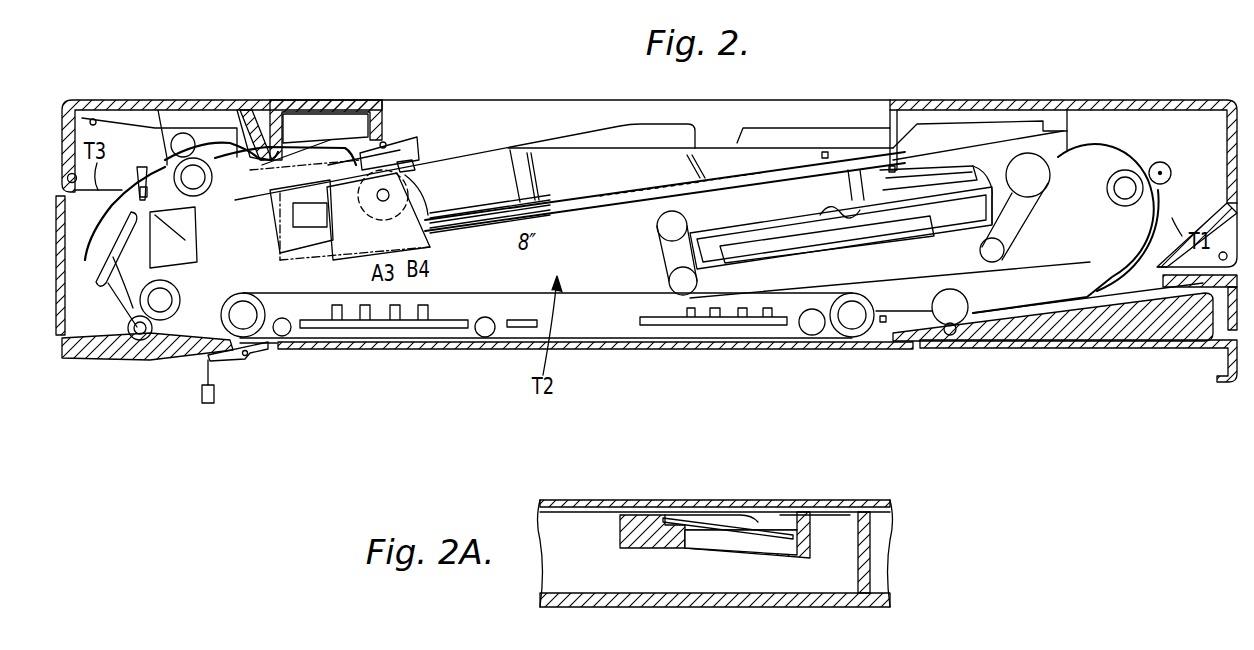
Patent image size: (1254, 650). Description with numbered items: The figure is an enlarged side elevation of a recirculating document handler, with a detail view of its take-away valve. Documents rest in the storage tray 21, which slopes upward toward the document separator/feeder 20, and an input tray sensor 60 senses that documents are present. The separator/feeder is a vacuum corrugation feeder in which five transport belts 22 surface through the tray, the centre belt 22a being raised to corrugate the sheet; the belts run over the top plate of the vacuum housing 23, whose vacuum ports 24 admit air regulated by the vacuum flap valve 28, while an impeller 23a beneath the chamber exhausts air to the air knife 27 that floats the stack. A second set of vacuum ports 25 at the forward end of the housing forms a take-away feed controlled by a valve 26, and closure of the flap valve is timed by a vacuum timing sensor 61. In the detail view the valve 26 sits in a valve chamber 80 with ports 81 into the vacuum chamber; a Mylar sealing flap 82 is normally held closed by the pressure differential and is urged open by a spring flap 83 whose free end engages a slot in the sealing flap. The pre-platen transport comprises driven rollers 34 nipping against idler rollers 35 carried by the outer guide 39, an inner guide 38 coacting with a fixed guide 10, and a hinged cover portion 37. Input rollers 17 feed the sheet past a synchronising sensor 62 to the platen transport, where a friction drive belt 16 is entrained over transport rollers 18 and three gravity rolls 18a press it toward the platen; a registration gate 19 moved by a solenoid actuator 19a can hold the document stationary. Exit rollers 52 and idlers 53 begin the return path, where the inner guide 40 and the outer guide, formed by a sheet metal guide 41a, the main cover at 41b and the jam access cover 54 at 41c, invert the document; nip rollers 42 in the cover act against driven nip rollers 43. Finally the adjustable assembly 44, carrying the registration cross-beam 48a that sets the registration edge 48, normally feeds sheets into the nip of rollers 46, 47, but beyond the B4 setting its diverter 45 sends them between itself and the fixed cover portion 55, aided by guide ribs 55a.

In FIG. 2, the fixed guide 10 is at (1120, 315).
In FIG. 2, the friction drive belt 16 is at (512, 292).
In FIG. 2, the input rollers 17 is at (965, 303).
In FIG. 2, the transport rollers 18 is at (222, 330).
In FIG. 2, the gravity rolls 18a is at (285, 318).
In FIG. 2, the registration member or gate 19 is at (257, 350).
In FIG. 2, the solenoid type actuator 19a is at (208, 403).
In FIG. 2, the document separator/feeder 20 is at (782, 172).
In FIG. 2, the storage tray 21 is at (600, 182).
In FIG. 2A, the transport belts 22 is at (850, 500).
In FIG. 2, the centre belt 22a is at (1024, 224).
In FIG. 2, the vacuum housing 23 is at (1037, 202).
In FIG. 2A, the vacuum housing 23 is at (870, 555).
In FIG. 2, the impeller 23a is at (778, 230).
In FIG. 2, the vacuum ports 24 is at (850, 170).
In FIG. 2, the second set of vacuum ports 25 is at (935, 172).
In FIG. 2A, the second set of vacuum ports 25 is at (770, 513).
In FIG. 2, the valve 26 is at (955, 175).
In FIG. 2, the air knife 27 is at (970, 120).
In FIG. 2, the vacuum flap valve 28 is at (822, 170).
In FIG. 2, the driven rollers 34 is at (1120, 170).
In FIG. 2, the idler rollers 35 is at (1165, 162).
In FIG. 2, the cover portion 37 is at (1078, 100).
In FIG. 2, the inner guide 38 is at (1135, 247).
In FIG. 2, the outer guide 39 is at (1172, 203).
In FIG. 2, the inner guide 40 is at (150, 228).
In FIG. 2, the sheet metal guide 41a is at (120, 342).
In FIG. 2, the main cover guide 41b is at (100, 283).
In FIG. 2, the jam access cover guide 41c is at (138, 182).
In FIG. 2, the nip rollers 42 is at (185, 133).
In FIG. 2, the driven nip rollers 43 is at (206, 160).
In FIG. 2, the assembly 44 is at (405, 125).
In FIG. 2, the diverter 45 is at (432, 128).
In FIG. 2, the driven nip roller 46 is at (420, 165).
In FIG. 2, the driven nip roller 47 is at (385, 140).
In FIG. 2, the registration edge 48 is at (428, 214).
In FIG. 2, the registration cross-beam 48a is at (418, 186).
In FIG. 2, the exit rollers 52 is at (182, 290).
In FIG. 2, the idlers 53 is at (140, 340).
In FIG. 2, the jam access cover 54 is at (146, 102).
In FIG. 2, the fixed cover portion 55 is at (307, 100).
In FIG. 2, the guide ribs 55a is at (328, 130).
In FIG. 2, the input tray sensor 60 is at (825, 152).
In FIG. 2, the vacuum timing sensor 61 is at (890, 166).
In FIG. 2, the synchronising sensor 62 is at (883, 322).
In FIG. 2A, the valve chamber 80 is at (788, 518).
In FIG. 2A, the ports 81 is at (708, 543).
In FIG. 2A, the sealing flap 82 is at (752, 525).
In FIG. 2A, the spring flap 83 is at (722, 515).